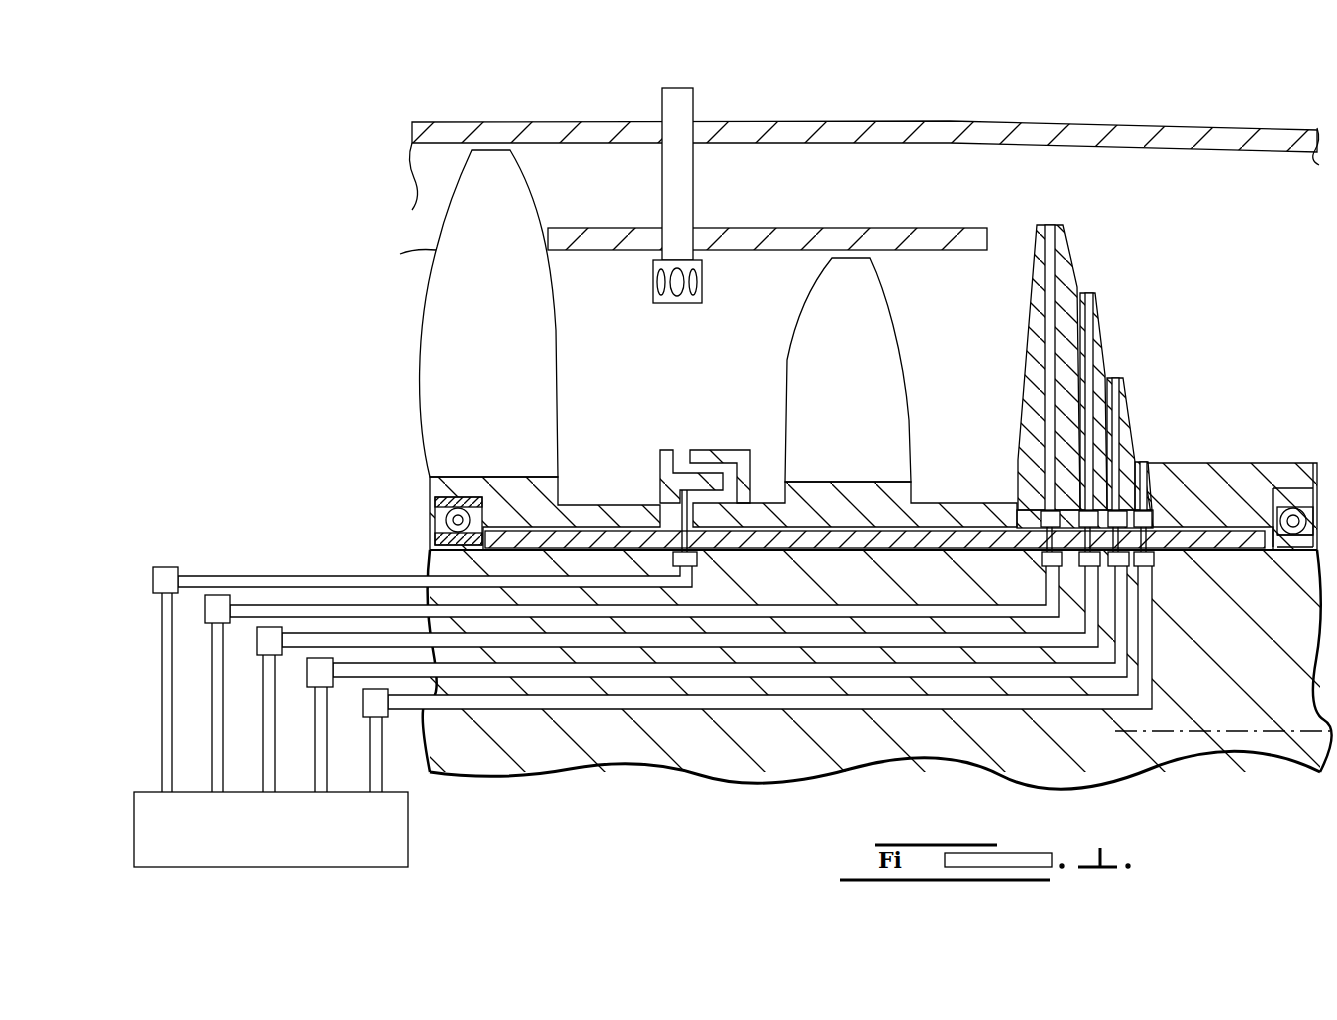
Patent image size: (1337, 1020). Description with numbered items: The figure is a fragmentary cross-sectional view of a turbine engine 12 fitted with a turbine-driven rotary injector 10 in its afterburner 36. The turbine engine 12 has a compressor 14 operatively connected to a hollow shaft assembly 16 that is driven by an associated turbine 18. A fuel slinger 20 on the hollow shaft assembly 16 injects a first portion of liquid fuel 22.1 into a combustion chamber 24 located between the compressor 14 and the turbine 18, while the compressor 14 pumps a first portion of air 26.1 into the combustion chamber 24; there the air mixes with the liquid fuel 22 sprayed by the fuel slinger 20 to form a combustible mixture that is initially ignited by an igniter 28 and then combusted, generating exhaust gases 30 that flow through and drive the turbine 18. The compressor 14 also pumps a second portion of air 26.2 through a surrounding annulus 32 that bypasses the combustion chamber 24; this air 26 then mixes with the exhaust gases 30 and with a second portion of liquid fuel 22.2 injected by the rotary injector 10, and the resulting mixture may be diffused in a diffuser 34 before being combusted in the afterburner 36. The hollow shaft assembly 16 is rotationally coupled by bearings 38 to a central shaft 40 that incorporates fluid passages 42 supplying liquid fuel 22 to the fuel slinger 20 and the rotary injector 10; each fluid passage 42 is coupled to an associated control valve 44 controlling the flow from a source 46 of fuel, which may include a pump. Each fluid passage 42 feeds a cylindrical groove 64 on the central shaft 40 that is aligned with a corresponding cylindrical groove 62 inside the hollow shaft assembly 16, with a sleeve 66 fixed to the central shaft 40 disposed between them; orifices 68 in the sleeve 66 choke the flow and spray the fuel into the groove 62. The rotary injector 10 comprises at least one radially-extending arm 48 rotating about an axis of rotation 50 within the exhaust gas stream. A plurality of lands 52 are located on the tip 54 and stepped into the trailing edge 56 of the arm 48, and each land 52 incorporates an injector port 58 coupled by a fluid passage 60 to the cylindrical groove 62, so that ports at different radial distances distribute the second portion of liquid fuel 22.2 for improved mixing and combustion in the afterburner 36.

The rotary injector 10 is at (1222, 242).
The turbine engine 12 is at (390, 106).
The compressor 14 is at (440, 262).
The hollow shaft assembly 16 is at (565, 500).
The turbine 18 is at (882, 279).
The fuel slinger 20 is at (705, 438).
The liquid fuel 22 is at (285, 842).
The first portion of liquid fuel 22.1 is at (715, 405).
The second portion of liquid fuel 22.2 is at (1068, 195).
The combustion chamber 24 is at (755, 366).
The air 26 is at (310, 344).
The first portion of air 26.1 is at (638, 365).
The second portion of air 26.2 is at (545, 183).
The igniter 28 is at (705, 288).
The exhaust gases 30 is at (985, 378).
The annulus 32 is at (965, 187).
The diffuser 34 is at (965, 106).
The afterburner 36 is at (1274, 122).
The bearings 38 is at (415, 521).
The central shaft 40 is at (1265, 752).
The fluid passages 42 is at (688, 572).
The control valve 44 is at (170, 572).
The source 46 is at (410, 838).
The radially-extending arm 48 is at (1022, 332).
The axis of rotation 50 is at (1255, 722).
The lands 52 is at (1066, 228).
The tip 54 is at (1030, 222).
The trailing edge 56 is at (1152, 312).
The injector port 58 is at (1049, 226).
The fluid passage 60 is at (1120, 495).
The cylindrical groove 62 is at (674, 512).
The cylindrical groove 64 is at (685, 548).
The sleeve 66 is at (898, 520).
The orifices 68 is at (700, 540).